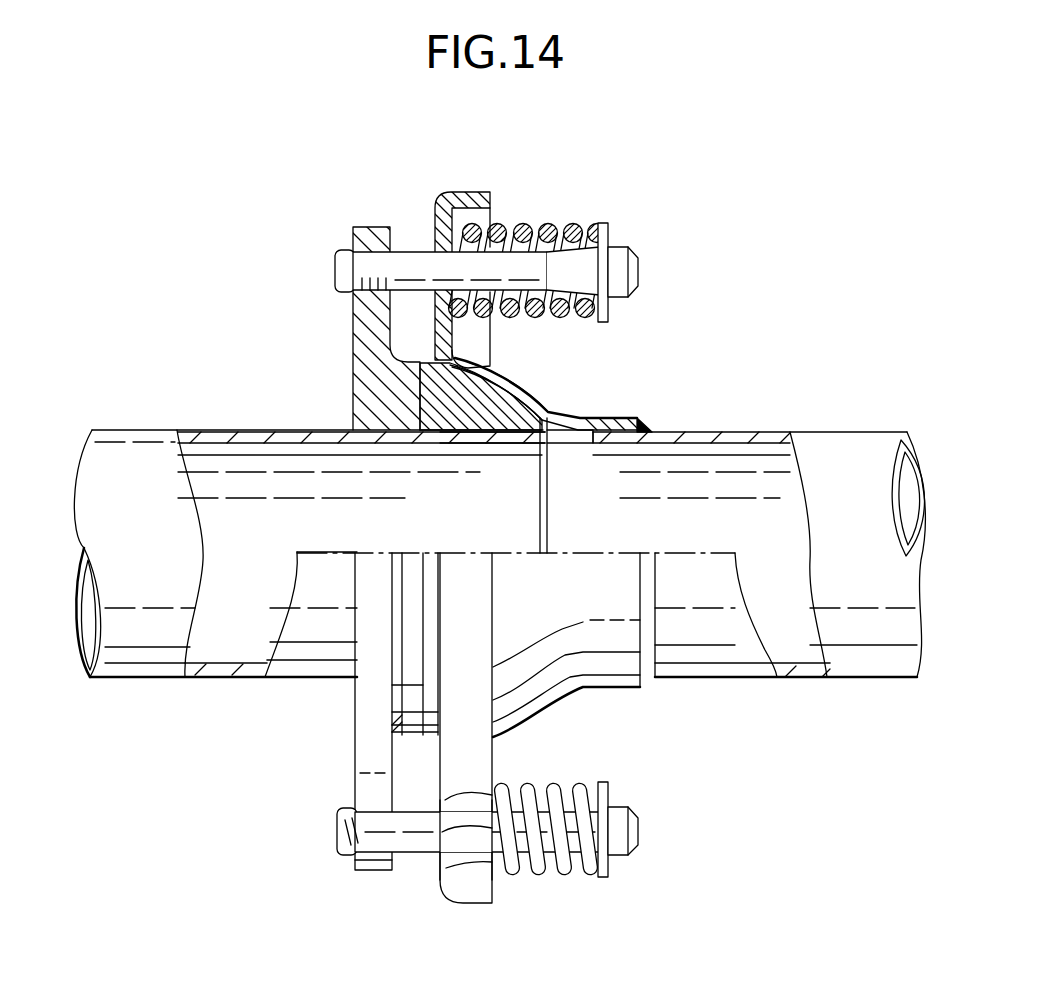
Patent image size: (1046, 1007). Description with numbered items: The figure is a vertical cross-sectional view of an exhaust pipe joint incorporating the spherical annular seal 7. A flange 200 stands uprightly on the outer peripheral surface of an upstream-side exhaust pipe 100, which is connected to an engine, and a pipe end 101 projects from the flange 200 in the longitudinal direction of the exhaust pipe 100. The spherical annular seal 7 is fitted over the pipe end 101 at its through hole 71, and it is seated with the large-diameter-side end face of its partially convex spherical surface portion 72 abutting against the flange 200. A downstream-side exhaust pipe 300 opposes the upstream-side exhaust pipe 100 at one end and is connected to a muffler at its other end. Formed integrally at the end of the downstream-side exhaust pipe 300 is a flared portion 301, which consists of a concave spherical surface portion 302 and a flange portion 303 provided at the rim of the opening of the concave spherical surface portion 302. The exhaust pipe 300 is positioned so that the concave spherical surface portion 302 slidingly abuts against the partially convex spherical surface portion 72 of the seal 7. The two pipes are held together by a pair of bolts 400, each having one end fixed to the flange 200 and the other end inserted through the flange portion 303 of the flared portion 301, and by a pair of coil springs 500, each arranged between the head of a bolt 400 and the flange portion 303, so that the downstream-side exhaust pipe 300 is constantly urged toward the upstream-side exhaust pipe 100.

The upstream-side exhaust pipe 100 is at (142, 430).
The pipe end 101 is at (462, 435).
The flange 200 is at (357, 313).
The downstream-side exhaust pipe 300 is at (770, 432).
The flared portion 301 is at (502, 370).
The concave spherical surface portion 302 is at (548, 394).
The flange portion 303 is at (443, 212).
The bolt 400 is at (504, 258).
The coil spring 500 is at (577, 240).
The spherical annular seal 7 is at (437, 403).
The through hole 71 is at (503, 440).
The partially convex spherical surface portion 72 is at (497, 372).